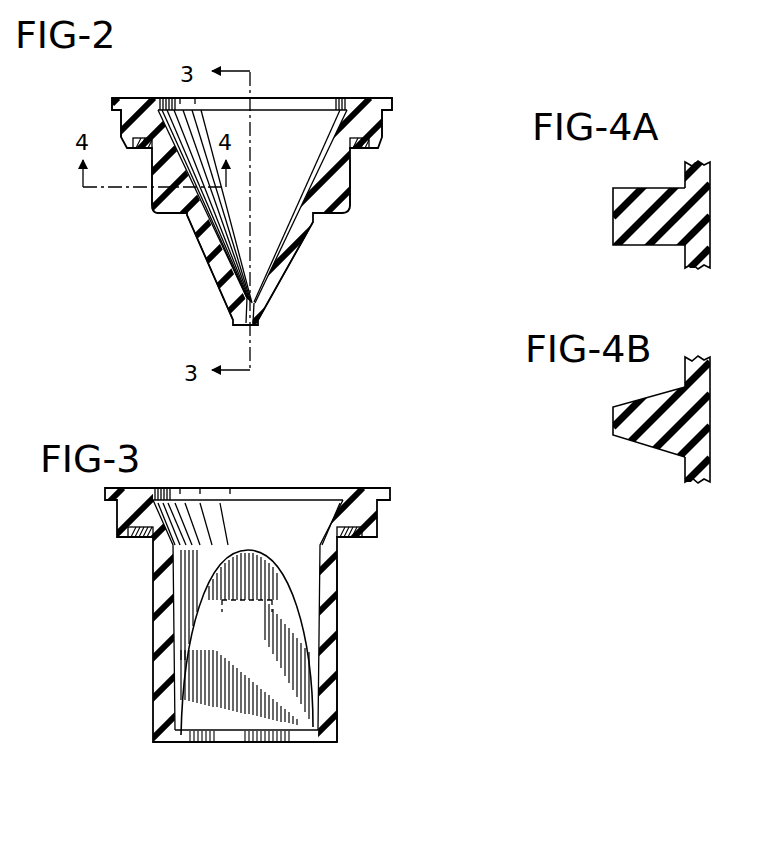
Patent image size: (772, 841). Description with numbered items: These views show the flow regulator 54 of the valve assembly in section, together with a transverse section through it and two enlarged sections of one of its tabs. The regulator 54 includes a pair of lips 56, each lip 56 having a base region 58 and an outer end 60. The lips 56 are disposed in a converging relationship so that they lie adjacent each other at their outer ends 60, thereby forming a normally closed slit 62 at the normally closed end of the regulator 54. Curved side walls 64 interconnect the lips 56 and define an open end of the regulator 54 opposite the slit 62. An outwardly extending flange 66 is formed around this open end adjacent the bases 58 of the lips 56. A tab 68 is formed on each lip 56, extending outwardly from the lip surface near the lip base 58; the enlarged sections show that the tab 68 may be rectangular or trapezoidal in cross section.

In FIG. 2, the flow regulator 54 is at (335, 233).
In FIG. 3, the flow regulator 54 is at (345, 650).
In FIG. 2, the lips 56 is at (215, 268).
In FIG. 3, the lips 56 is at (230, 715).
In FIG. 4A, the lips 56 is at (700, 181).
In FIG. 4B, the lips 56 is at (700, 360).
In FIG. 2, the base region 58 is at (352, 144).
In FIG. 3, the base region 58 is at (283, 587).
In FIG. 2, the outer end 60 is at (270, 307).
In FIG. 3, the outer end 60 is at (303, 723).
In FIG. 2, the slit 62 is at (257, 330).
In FIG. 3, the slit 62 is at (197, 740).
In FIG. 2, the curved side walls 64 is at (297, 125).
In FIG. 3, the curved side walls 64 is at (160, 603).
In FIG. 2, the flange 66 is at (383, 118).
In FIG. 3, the flange 66 is at (367, 515).
In FIG. 2, the tab 68 is at (175, 205).
In FIG. 3, the tab 68 is at (236, 618).
In FIG. 4A, the tab 68 is at (613, 228).
In FIG. 4B, the tab 68 is at (628, 430).